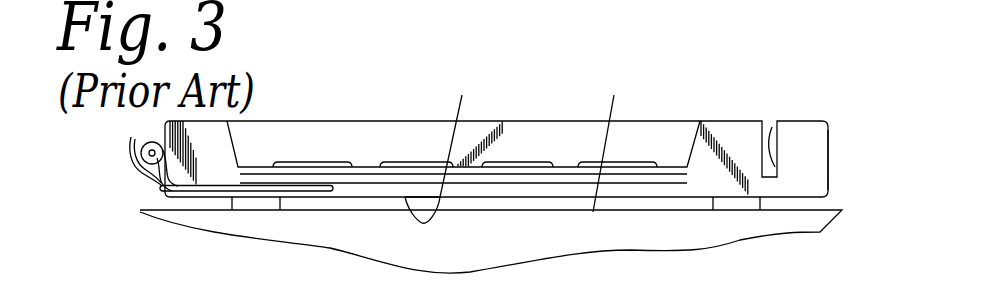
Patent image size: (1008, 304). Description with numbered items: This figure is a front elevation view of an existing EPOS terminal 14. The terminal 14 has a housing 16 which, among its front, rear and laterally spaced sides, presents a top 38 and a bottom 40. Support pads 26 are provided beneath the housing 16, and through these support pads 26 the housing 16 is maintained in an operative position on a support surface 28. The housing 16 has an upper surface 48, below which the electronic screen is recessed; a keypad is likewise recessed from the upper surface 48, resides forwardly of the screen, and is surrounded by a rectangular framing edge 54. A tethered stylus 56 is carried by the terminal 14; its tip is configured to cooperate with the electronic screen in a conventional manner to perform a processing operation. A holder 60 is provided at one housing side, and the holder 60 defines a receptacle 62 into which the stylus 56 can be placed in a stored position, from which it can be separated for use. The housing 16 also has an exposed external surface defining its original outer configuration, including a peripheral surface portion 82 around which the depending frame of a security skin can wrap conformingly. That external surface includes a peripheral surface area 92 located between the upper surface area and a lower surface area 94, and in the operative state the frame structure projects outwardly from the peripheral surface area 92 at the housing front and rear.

The EPOS terminal 14 is at (792, 103).
The housing 16 is at (498, 121).
The support pads 26 is at (280, 206).
The support surface 28 is at (614, 95).
The top 38 is at (400, 121).
The bottom 40 is at (462, 95).
The upper surface 48 is at (331, 121).
The framing edge 54 is at (689, 150).
The tethered stylus 56 is at (152, 142).
The holder 60 is at (128, 152).
The receptacle 62 is at (165, 188).
The peripheral surface portion 82 is at (830, 177).
The peripheral surface area 92 is at (829, 151).
The lower surface area 94 is at (355, 199).